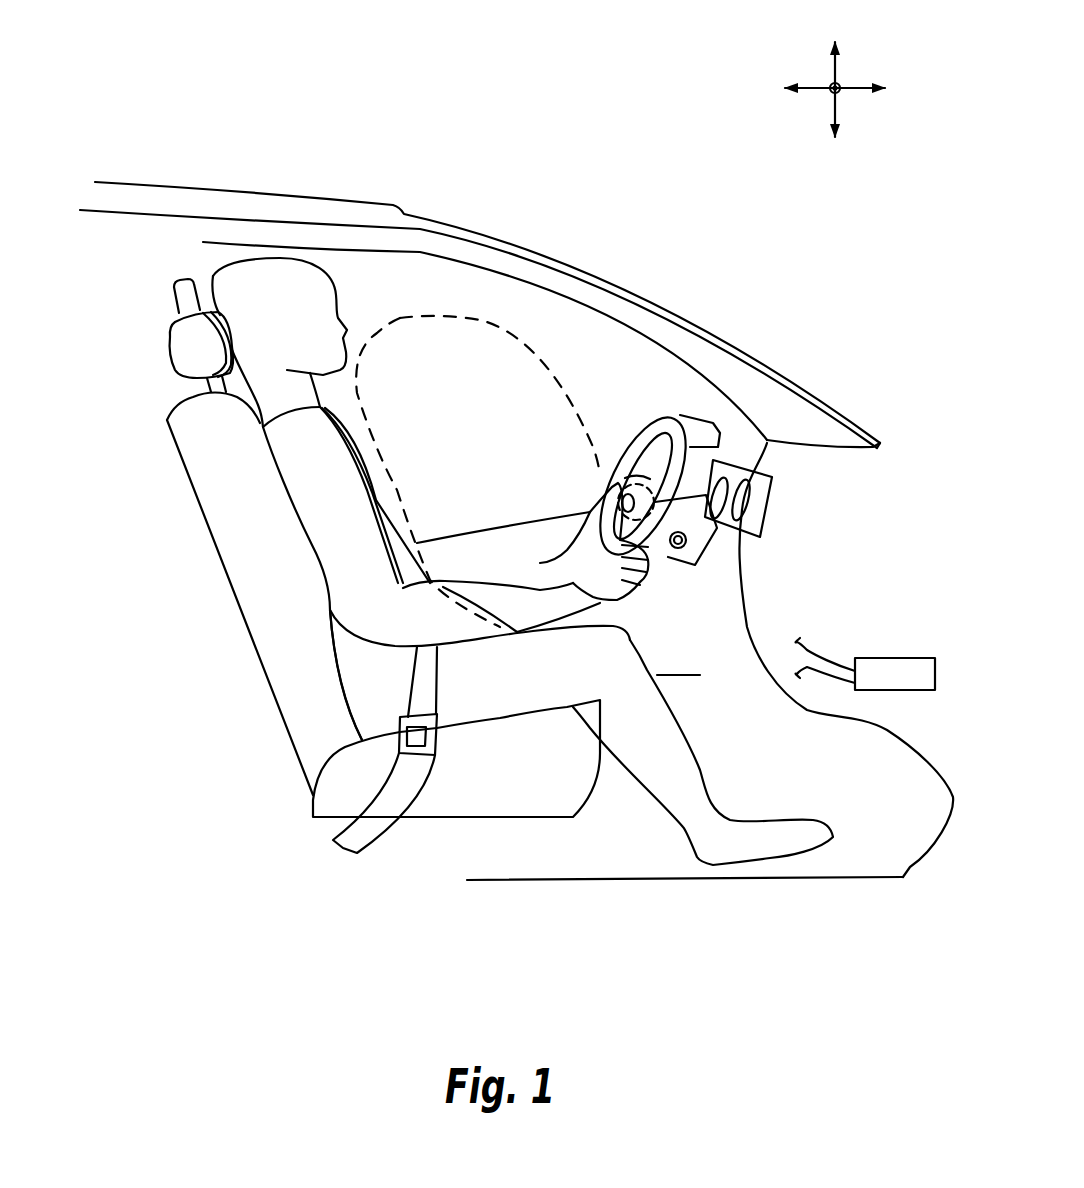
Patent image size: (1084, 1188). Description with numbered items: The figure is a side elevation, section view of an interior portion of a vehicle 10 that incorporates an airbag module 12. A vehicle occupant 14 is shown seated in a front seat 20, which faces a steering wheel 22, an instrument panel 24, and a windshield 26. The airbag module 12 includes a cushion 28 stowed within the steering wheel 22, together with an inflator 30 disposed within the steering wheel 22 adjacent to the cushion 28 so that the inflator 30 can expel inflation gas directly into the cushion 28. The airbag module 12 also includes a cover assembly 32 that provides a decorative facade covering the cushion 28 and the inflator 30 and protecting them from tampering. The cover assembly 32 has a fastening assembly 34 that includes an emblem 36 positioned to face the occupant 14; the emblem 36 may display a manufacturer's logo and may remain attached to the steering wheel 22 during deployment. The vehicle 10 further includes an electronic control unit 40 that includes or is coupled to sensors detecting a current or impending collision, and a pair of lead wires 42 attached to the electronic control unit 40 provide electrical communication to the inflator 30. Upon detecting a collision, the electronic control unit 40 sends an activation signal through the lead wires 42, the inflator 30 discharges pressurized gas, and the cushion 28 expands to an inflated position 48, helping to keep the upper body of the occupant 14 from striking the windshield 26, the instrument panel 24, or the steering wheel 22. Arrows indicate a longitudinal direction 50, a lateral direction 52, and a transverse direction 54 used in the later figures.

The vehicle 10 is at (508, 172).
The airbag module 12 is at (605, 420).
The vehicle occupant 14 is at (245, 282).
The front seat 20 is at (232, 590).
The steering wheel 22 is at (660, 437).
The instrument panel 24 is at (773, 468).
The windshield 26 is at (690, 320).
The cushion 28 is at (585, 500).
The inflator 30 is at (140, 345).
The cover assembly 32 is at (653, 467).
The fastening assembly 34 is at (633, 457).
The emblem 36 is at (608, 488).
The electronic control unit 40 is at (873, 660).
The lead wires 42 is at (818, 680).
The inflated position 48 is at (470, 323).
The longitudinal direction 50 is at (855, 88).
The lateral direction 52 is at (840, 93).
The transverse direction 54 is at (832, 70).